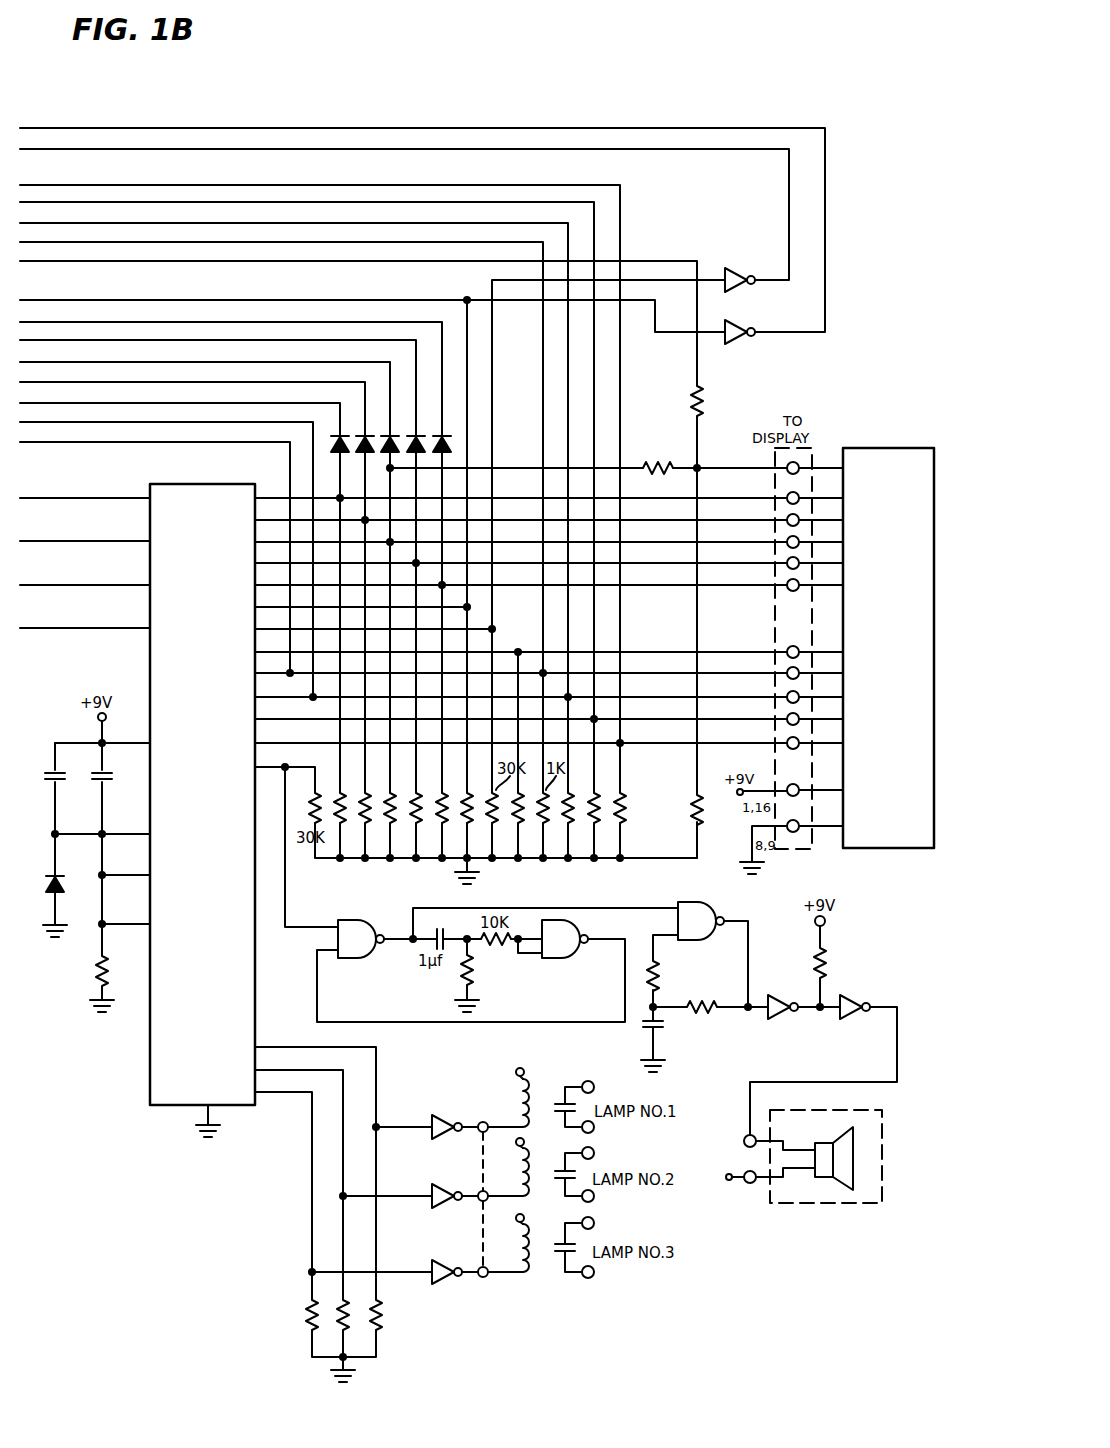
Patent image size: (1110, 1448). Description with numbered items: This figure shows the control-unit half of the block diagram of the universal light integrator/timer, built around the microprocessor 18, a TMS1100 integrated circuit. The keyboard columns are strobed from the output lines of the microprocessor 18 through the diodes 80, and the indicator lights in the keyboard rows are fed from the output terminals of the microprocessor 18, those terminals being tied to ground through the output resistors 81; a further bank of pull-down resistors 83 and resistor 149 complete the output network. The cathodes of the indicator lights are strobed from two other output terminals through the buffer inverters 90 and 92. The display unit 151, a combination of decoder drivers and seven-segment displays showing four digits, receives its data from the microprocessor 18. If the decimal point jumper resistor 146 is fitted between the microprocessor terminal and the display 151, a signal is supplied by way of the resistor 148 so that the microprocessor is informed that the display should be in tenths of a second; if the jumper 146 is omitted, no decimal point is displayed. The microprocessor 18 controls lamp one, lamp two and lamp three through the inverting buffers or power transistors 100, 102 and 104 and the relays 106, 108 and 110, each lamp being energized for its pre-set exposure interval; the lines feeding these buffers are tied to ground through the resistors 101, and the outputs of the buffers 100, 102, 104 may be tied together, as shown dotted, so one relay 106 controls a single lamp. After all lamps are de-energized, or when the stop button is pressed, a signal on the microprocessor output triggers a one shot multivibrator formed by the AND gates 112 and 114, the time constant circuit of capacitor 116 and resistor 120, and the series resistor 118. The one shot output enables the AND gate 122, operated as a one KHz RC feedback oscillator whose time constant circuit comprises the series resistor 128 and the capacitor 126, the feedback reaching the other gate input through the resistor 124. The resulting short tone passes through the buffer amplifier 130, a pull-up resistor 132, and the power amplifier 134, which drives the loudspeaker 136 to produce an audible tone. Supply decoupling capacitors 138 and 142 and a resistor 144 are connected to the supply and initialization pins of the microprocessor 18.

The microprocessor 18 is at (150, 1036).
The diodes 80 is at (392, 436).
The output resistors 81 is at (622, 790).
The 30K resistors 83 is at (366, 790).
The buffer inverter 90 is at (744, 330).
The buffer inverter 92 is at (752, 293).
The power transistor 100 is at (440, 1116).
The resistors 101 is at (372, 1330).
The power transistor 102 is at (436, 1186).
The power transistor 104 is at (434, 1262).
The relay 106 is at (516, 1094).
The relay 108 is at (516, 1172).
The relay 110 is at (516, 1242).
The AND gate 112 is at (374, 960).
The AND gate 114 is at (578, 934).
The capacitor 116 is at (438, 934).
The series resistor 118 is at (494, 946).
The resistor 120 is at (474, 982).
The AND gate 122 is at (710, 916).
The resistor 124 is at (658, 970).
The capacitor 126 is at (648, 1036).
The series resistor 128 is at (702, 1002).
The buffer amplifier 130 is at (776, 1018).
The resistor 10K 132 is at (814, 960).
The power amplifier 134 is at (852, 996).
The speaker 136 is at (828, 1180).
The capacitor 138 is at (52, 786).
The capacitor 142 is at (100, 786).
The resistor 144 is at (98, 964).
The decimal point jumper resistor 146 is at (656, 474).
The resistor 148 is at (692, 405).
The resistor 30K 149 is at (692, 806).
The display unit 151 is at (882, 448).